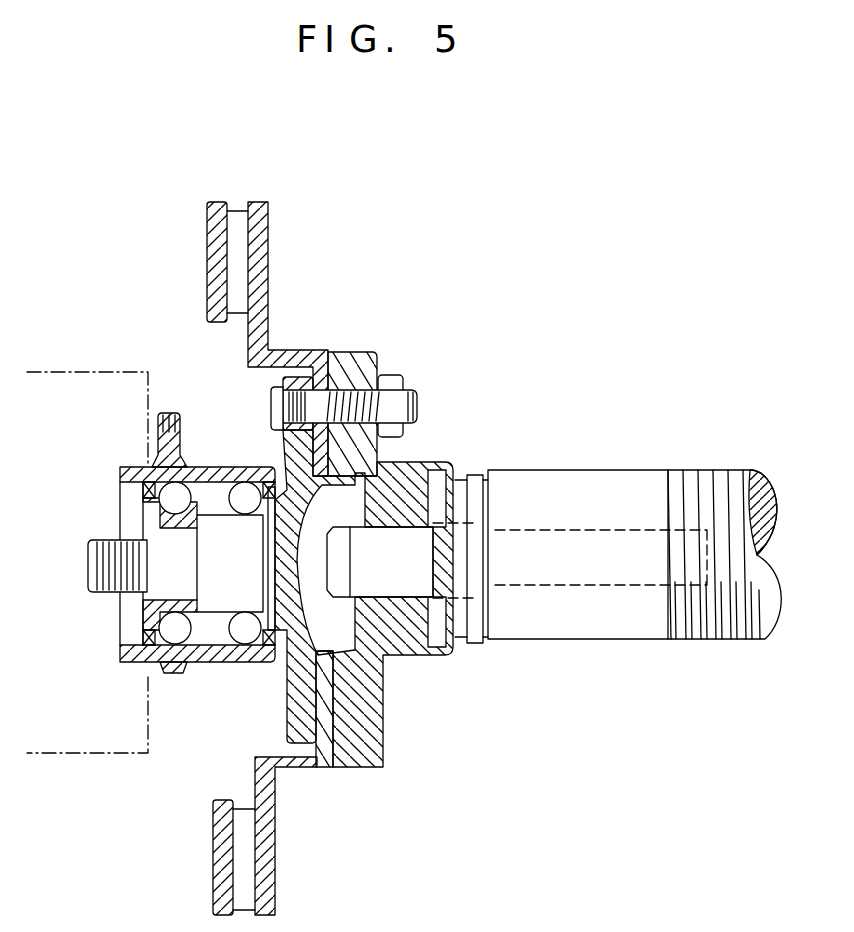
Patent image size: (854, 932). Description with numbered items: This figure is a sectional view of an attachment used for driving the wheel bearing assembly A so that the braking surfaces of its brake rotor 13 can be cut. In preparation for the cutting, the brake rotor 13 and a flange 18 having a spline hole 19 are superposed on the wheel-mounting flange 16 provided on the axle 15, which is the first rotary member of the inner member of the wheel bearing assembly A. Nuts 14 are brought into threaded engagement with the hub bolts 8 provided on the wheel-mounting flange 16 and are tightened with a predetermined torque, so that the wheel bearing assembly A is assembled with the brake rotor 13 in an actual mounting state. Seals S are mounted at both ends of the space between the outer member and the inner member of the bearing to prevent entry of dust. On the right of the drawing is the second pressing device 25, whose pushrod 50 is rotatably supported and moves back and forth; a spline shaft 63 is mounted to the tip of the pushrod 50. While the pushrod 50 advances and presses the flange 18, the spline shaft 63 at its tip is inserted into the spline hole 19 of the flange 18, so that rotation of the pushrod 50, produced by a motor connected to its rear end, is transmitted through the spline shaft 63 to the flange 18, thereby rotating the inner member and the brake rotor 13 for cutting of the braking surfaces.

The wheel bearing assembly A is at (203, 271).
The brake rotor 13 is at (256, 202).
The nuts 14 is at (390, 380).
The wheel-mounting flange 16 is at (297, 376).
The flange 18 is at (344, 362).
The spline hole 19 is at (398, 535).
The hub bolts 8 is at (417, 398).
The axle 15 is at (230, 592).
The seals S is at (141, 489).
The spline shaft 63 is at (401, 582).
The second pressing device 25 is at (597, 460).
The pushrod 50 is at (646, 488).